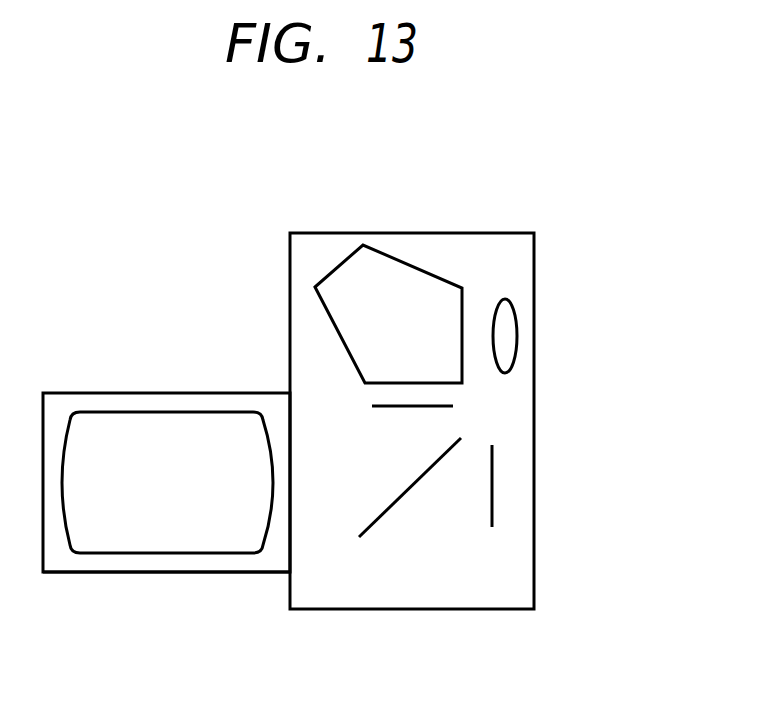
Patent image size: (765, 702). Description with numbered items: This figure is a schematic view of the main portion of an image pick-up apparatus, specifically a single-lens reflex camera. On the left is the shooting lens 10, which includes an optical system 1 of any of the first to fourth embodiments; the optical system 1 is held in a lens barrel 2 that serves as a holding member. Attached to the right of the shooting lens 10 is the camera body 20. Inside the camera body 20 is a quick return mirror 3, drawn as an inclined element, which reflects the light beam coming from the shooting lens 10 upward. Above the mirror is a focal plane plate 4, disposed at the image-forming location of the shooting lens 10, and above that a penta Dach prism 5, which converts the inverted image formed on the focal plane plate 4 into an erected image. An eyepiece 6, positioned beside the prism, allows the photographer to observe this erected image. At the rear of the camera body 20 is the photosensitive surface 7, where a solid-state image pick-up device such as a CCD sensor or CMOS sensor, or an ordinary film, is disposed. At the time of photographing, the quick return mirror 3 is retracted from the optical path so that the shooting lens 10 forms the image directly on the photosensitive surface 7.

The optical system 1 is at (127, 412).
The lens barrel 2 is at (175, 573).
The quick return mirror 3 is at (394, 505).
The focal plane plate 4 is at (393, 407).
The penta Dach prism 5 is at (338, 265).
The eyepiece 6 is at (517, 318).
The photosensitive surface 7 is at (493, 468).
The shooting lens 10 is at (205, 393).
The camera body 20 is at (427, 218).